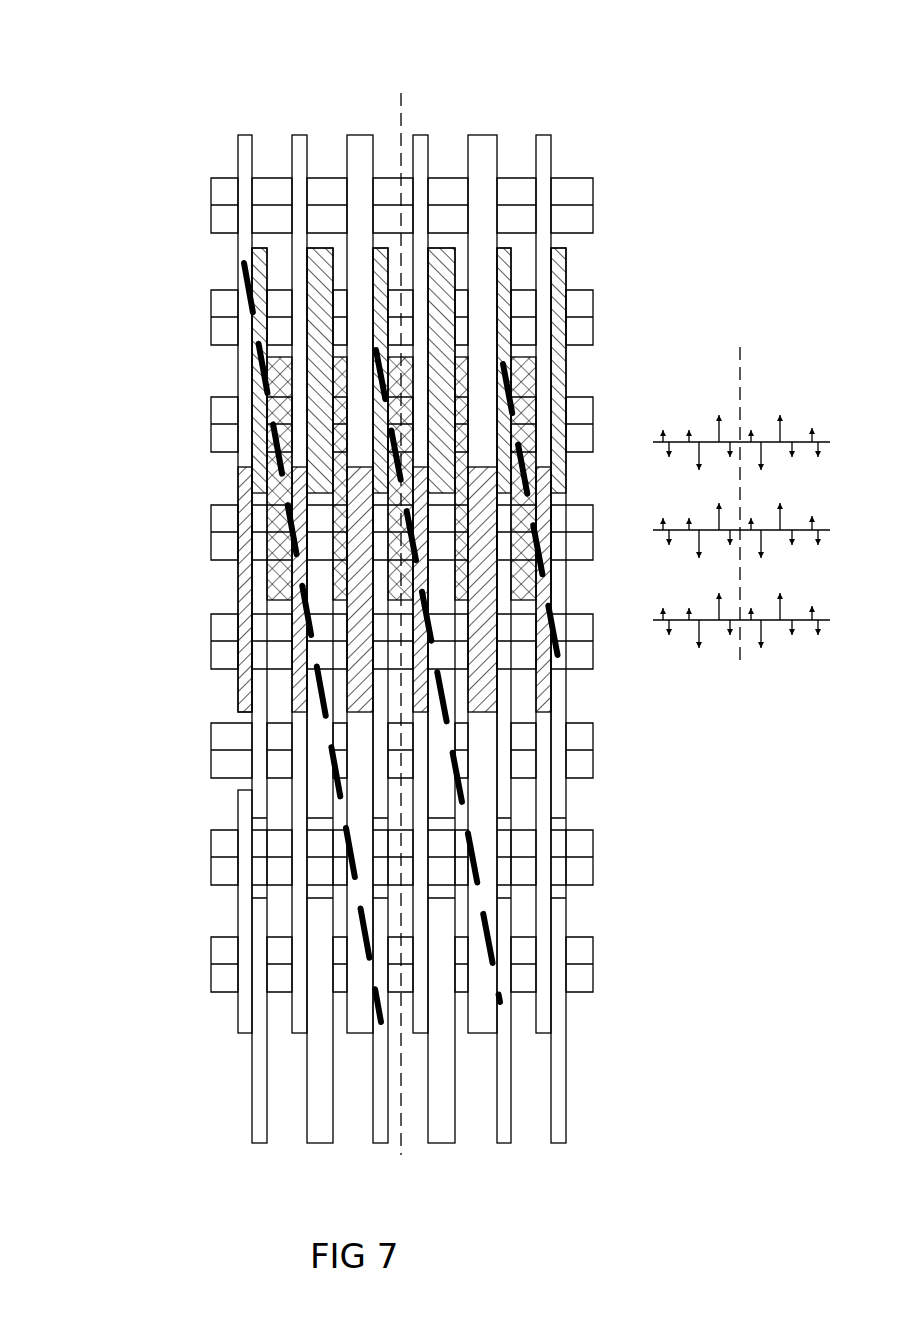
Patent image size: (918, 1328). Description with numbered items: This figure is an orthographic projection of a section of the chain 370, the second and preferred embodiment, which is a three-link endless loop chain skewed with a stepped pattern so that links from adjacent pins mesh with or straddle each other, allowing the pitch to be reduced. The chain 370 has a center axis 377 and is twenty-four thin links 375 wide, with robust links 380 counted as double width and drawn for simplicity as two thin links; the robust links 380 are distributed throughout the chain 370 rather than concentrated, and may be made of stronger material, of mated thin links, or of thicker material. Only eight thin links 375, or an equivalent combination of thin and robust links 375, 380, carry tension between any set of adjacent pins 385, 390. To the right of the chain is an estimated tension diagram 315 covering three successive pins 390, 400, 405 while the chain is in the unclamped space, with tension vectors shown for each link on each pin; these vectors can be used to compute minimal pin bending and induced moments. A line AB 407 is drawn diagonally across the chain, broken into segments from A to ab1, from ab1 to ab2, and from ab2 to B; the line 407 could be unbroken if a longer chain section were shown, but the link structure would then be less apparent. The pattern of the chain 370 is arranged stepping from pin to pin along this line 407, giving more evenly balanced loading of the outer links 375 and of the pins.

The chain 370 is at (430, 66).
The thin links 375 is at (544, 133).
The center axis 377 is at (398, 106).
The robust links 380 is at (530, 378).
The elongated pins 385 is at (591, 316).
The pin 390 is at (652, 442).
The pin 400 is at (652, 530).
The pin 405 is at (652, 620).
The line AB 407 is at (244, 263).
The field distribution diagrams 315 is at (800, 350).
The point ab1 is at (370, 350).
The point ab2 is at (519, 350).